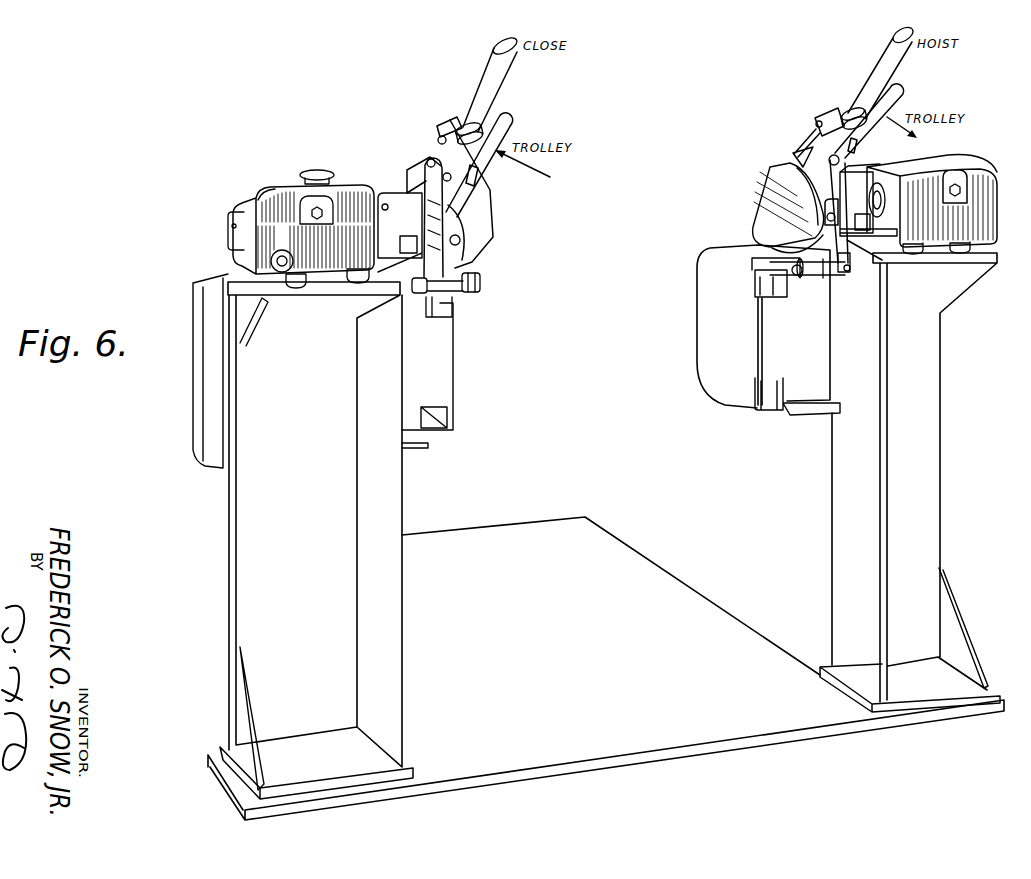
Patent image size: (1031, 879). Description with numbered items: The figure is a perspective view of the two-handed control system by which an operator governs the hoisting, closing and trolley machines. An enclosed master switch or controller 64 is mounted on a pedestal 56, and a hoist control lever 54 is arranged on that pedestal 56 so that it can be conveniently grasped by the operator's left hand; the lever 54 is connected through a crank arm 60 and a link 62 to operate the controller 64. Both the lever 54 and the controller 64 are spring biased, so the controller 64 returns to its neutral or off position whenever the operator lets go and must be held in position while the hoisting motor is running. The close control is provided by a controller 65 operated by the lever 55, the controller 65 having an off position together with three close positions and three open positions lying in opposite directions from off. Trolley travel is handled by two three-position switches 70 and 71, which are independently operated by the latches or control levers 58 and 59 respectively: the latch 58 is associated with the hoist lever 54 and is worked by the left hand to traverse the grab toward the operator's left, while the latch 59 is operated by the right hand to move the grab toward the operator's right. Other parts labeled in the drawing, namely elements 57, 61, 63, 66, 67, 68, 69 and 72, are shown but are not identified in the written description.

The hoist control lever 54 is at (875, 60).
The close control lever 55 is at (487, 63).
The pedestal 56 is at (933, 459).
The left upright standard 57 is at (231, 522).
The latch or control lever 58 is at (904, 90).
The latch or control lever 59 is at (509, 117).
The crank arm 60 is at (842, 273).
The mounting bracket 61 is at (428, 318).
The link 62 is at (771, 298).
The cross shaft 63 is at (468, 295).
The controller 64 is at (768, 289).
The close controller 65 is at (440, 381).
The link rod 66 is at (795, 154).
The lever pivot block 67 is at (460, 190).
The lever pivot bracket 68 is at (815, 134).
The lever bracket 69 is at (431, 159).
The three-position switch 70 is at (950, 160).
The three-position switch 71 is at (270, 175).
The oil cup 72 is at (320, 171).